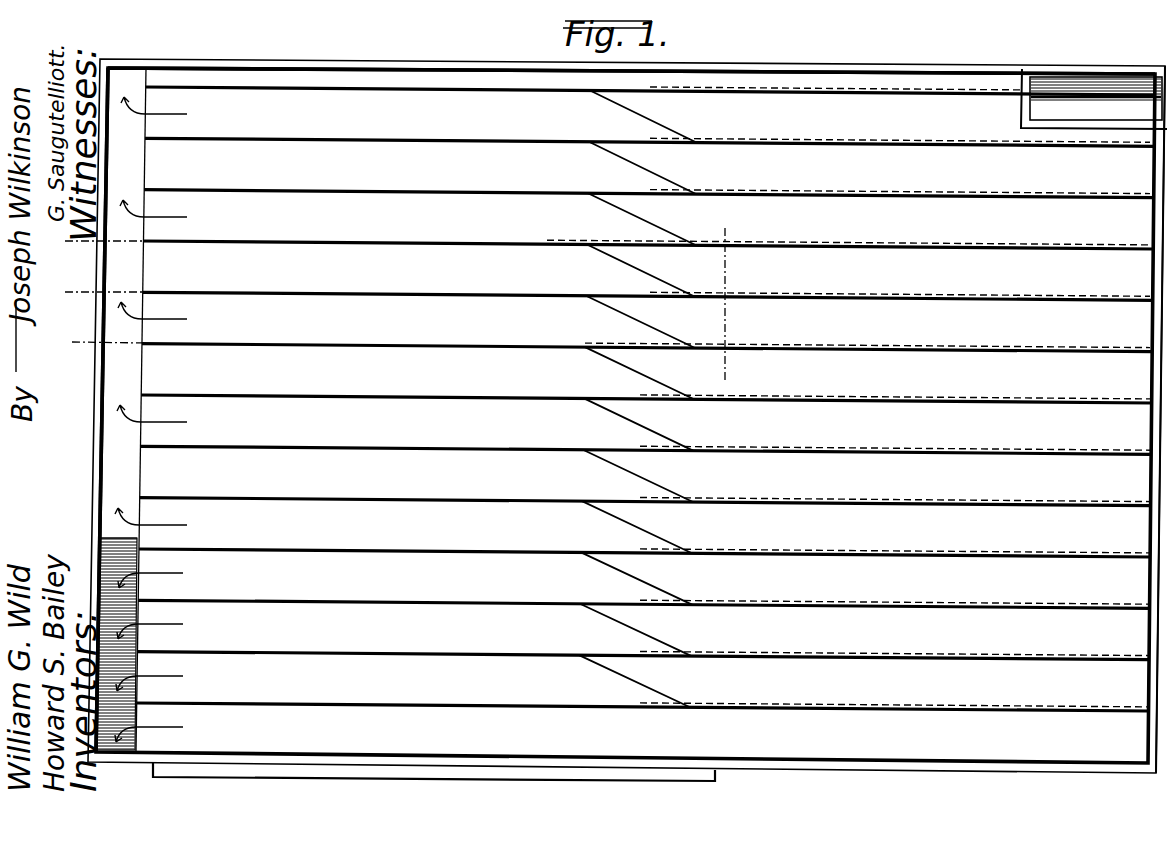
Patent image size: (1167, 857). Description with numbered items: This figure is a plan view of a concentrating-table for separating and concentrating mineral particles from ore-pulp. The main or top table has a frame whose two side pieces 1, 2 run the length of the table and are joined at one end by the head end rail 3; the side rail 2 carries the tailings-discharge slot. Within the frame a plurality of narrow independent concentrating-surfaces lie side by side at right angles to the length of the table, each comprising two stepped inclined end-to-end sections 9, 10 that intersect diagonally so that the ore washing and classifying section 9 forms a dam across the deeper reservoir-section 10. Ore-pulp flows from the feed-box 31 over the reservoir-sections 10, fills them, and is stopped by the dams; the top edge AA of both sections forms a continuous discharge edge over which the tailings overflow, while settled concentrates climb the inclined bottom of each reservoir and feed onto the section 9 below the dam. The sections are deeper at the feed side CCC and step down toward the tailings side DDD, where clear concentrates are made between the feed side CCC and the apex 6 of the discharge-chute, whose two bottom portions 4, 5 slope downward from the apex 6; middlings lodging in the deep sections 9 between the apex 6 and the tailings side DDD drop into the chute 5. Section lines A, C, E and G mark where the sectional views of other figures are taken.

The side piece of the frame 1 is at (852, 70).
The side piece of the frame 2 is at (815, 770).
The head end rail 3 is at (1146, 427).
The downwardly-inclined bottom portion of the discharge-chute 4 is at (118, 361).
The downwardly-inclined bottom portion of the discharge-chute 5 is at (115, 712).
The apex of the discharge-chute 6 is at (115, 538).
The ore washing and classifying section 9 is at (646, 399).
The reservoir-section 10 is at (848, 397).
The feed-box 31 is at (1085, 95).
The section line A is at (95, 249).
The section line C is at (93, 301).
The section line E is at (95, 344).
The section line G is at (734, 300).
The top edge of both sections AA is at (308, 419).
The feed side of the table CCC is at (631, 55).
The tailings side of the table DDD is at (434, 782).